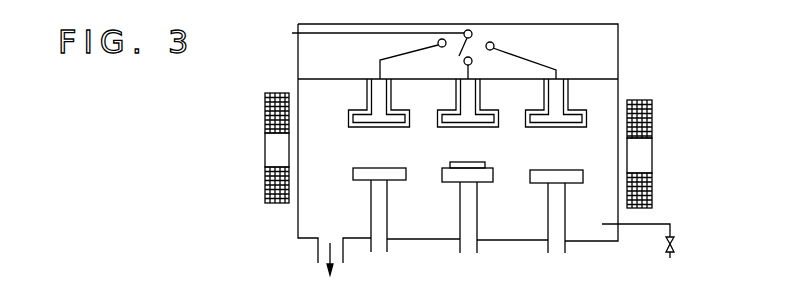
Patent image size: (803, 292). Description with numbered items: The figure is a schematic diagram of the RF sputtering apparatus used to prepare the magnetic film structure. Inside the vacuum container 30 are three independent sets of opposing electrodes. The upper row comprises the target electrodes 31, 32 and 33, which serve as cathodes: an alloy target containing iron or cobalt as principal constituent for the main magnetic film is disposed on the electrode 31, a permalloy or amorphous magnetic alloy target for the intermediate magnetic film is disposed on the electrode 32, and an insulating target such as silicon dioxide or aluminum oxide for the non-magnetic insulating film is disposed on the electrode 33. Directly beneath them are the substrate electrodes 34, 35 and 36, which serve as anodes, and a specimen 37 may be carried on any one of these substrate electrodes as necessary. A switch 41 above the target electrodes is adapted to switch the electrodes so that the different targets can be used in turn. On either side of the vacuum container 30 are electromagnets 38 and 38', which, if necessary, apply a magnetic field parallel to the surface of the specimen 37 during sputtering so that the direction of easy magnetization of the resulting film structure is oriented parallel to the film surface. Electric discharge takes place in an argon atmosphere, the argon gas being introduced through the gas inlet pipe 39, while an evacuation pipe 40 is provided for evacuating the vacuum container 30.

The vacuum container 30 is at (618, 88).
The switch 41 is at (472, 34).
The target electrode 32 is at (365, 129).
The target electrode 31 is at (450, 129).
The target electrode 33 is at (557, 130).
The substrate electrode 35 is at (358, 181).
The substrate electrode 34 is at (447, 184).
The specimen 37 is at (485, 145).
The substrate electrode 36 is at (536, 184).
The electromagnet 38 is at (664, 154).
The electromagnet 38' is at (243, 148).
The gas inlet pipe 39 is at (637, 226).
The evacuation pipe 40 is at (338, 268).